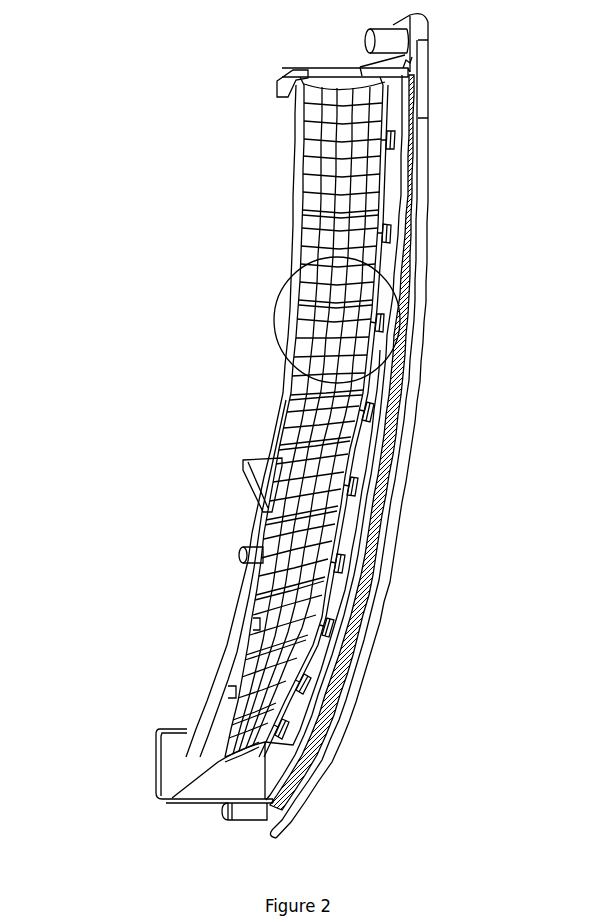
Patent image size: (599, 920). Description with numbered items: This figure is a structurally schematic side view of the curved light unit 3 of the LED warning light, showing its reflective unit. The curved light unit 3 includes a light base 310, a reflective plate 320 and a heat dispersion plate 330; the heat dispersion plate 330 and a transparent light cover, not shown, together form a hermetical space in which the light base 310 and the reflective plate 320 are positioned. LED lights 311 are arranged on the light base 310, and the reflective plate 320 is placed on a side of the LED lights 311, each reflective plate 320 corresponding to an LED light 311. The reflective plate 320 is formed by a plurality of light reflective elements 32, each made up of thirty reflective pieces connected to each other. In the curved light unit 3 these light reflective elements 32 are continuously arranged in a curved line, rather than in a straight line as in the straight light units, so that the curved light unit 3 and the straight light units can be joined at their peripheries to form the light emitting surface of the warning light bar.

The curved light unit 3 is at (118, 348).
The light reflective element 32 is at (290, 285).
The light base 310 is at (389, 289).
The LED light 311 is at (350, 328).
The reflective plate 320 is at (337, 325).
The heat dispersion plate 330 is at (427, 290).